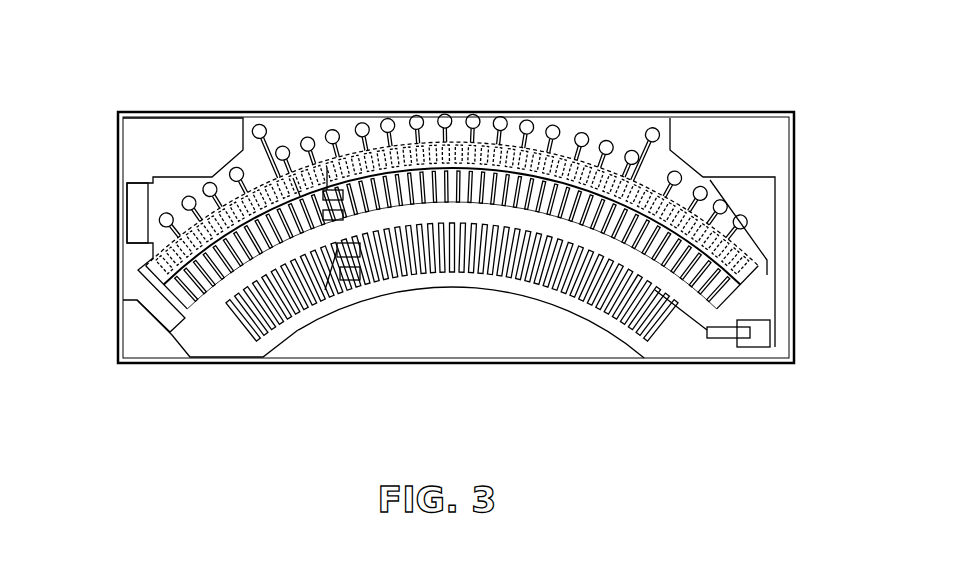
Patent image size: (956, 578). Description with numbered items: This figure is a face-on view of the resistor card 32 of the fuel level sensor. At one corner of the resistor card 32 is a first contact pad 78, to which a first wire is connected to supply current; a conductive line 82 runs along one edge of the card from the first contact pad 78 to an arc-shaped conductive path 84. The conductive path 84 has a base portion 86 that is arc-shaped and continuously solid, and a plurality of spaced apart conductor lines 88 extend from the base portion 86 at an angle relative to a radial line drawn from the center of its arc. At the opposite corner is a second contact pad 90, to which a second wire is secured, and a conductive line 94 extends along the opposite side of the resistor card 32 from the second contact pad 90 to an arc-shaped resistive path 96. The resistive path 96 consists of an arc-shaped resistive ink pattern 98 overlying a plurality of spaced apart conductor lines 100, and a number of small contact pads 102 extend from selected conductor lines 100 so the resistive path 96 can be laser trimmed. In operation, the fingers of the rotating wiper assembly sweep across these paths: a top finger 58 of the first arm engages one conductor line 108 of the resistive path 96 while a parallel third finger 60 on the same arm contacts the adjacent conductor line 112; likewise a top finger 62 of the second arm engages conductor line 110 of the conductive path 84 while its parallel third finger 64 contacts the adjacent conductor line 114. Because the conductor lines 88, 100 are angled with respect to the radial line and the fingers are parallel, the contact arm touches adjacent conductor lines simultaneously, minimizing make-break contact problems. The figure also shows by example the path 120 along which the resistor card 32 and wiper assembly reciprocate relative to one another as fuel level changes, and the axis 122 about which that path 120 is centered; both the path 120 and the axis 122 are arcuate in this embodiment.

The resistor card 32 is at (238, 100).
The second contact pad 90 is at (152, 140).
The conductive line 94 is at (128, 213).
The conductor line 112 is at (293, 178).
The conductor line 108 is at (327, 168).
The top finger 58 is at (337, 190).
The third finger 60 is at (345, 213).
The small contact pads 102 is at (442, 128).
The resistive path 96 is at (481, 131).
The resistive ink pattern 98 is at (538, 150).
The first contact pad 78 is at (764, 130).
The conductive line 82 is at (780, 232).
The path 120 is at (740, 307).
The axis 122 is at (736, 338).
The conductor lines 100 is at (212, 312).
The conductor lines 88 is at (252, 300).
The conductive path 84 is at (462, 283).
The base portion 86 is at (457, 288).
The third finger 64 is at (352, 281).
The top finger 62 is at (380, 290).
The conductor line 110 is at (340, 258).
The conductor line 114 is at (325, 290).